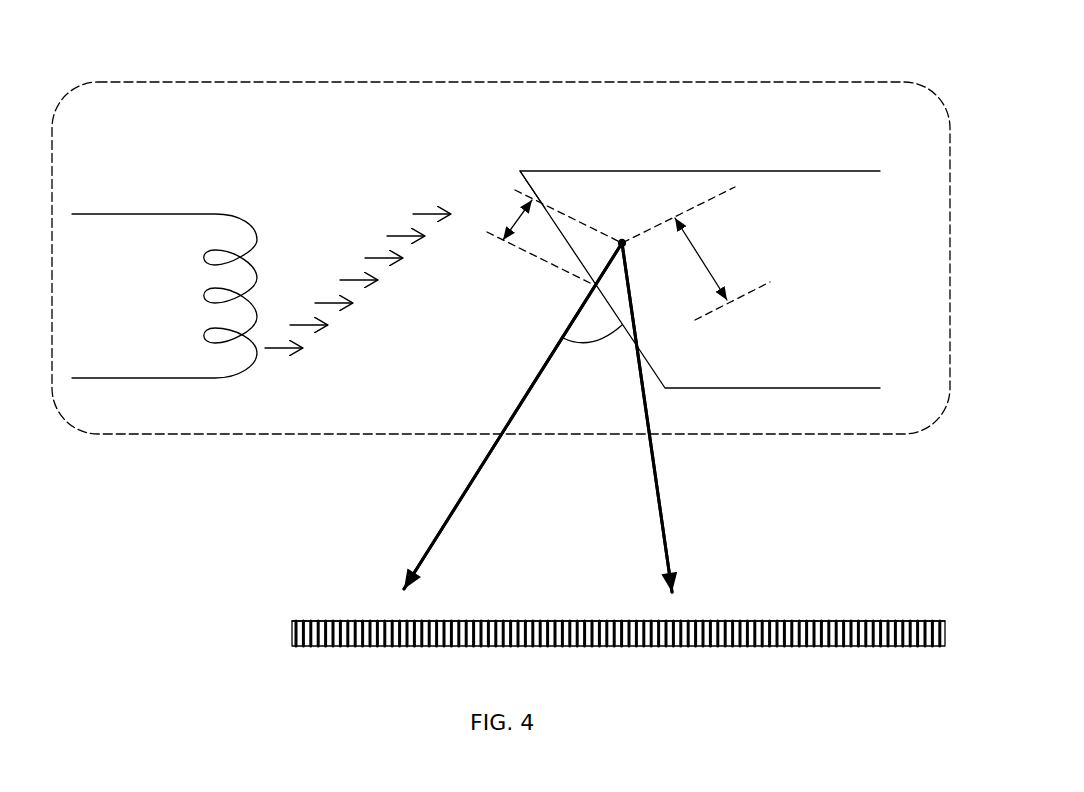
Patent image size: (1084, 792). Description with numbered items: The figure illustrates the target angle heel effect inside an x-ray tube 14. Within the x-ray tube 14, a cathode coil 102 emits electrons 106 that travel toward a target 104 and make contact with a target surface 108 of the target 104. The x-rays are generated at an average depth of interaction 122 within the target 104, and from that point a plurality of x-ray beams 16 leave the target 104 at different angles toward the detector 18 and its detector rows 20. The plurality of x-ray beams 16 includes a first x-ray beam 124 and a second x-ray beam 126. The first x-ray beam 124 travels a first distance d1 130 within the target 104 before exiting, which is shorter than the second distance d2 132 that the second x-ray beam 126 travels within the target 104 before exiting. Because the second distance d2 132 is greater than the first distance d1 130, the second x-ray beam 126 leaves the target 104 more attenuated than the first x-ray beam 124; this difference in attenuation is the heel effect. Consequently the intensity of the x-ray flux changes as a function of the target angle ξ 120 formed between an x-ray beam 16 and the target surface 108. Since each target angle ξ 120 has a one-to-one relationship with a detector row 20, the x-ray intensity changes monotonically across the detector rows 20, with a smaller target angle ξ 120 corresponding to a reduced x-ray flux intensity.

The x-ray tube 14 is at (478, 79).
The cathode coil 102 is at (163, 208).
The target 104 is at (678, 169).
The electrons 106 is at (367, 224).
The target surface 108 is at (514, 183).
The target angle ξ 120 is at (560, 373).
The average depth of interaction 122 is at (623, 240).
The first x-ray beam 124 is at (418, 558).
The second x-ray beam 126 is at (655, 515).
The first distance d1 130 is at (541, 250).
The second distance d2 132 is at (773, 244).
The x-ray beams 16 is at (462, 490).
The detector 18 is at (352, 616).
The detector rows 20 is at (750, 620).